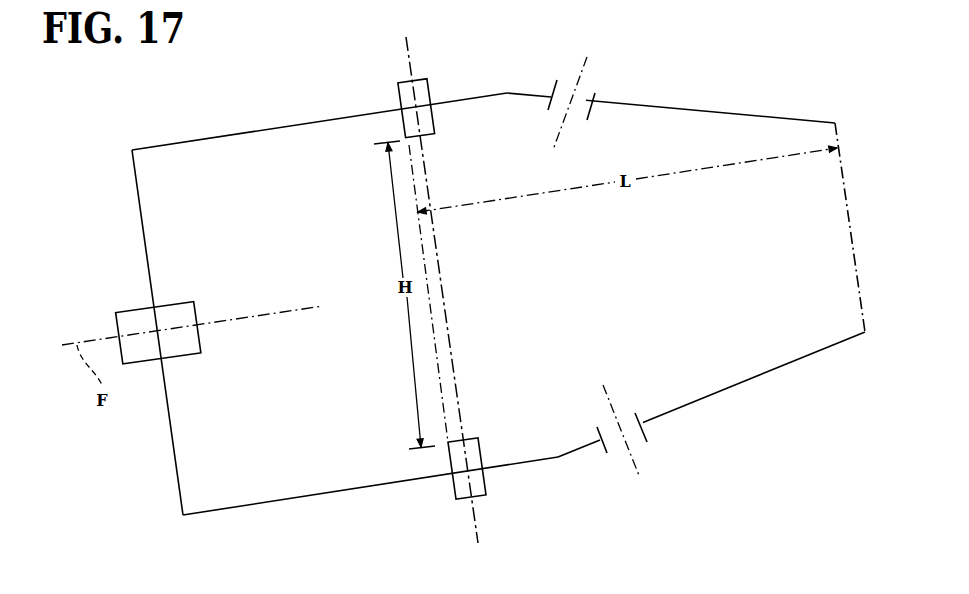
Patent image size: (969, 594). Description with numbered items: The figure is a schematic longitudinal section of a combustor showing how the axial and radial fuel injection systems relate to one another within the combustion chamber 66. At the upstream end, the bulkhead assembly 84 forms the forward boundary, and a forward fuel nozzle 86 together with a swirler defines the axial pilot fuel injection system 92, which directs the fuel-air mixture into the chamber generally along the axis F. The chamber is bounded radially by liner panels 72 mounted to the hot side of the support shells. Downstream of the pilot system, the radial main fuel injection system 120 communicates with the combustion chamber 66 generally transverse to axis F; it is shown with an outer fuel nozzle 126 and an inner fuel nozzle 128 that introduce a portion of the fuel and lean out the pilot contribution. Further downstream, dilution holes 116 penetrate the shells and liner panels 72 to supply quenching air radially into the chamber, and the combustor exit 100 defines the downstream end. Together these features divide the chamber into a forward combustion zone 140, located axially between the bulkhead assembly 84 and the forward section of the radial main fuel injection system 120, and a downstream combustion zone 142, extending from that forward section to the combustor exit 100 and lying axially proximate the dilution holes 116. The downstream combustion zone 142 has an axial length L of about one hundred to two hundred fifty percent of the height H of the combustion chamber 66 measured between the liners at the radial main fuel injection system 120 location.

The combustion chamber 66 is at (700, 107).
The liner panels 72 is at (284, 128).
The bulkhead assembly 84 is at (182, 478).
The forward fuel nozzles 86 is at (133, 308).
The axial pilot fuel injection system 92 is at (92, 238).
The combustor exit 100 is at (843, 175).
The dilution holes 116 is at (580, 100).
The radial main fuel injection system 120 is at (395, 53).
The outer fuel nozzles 126 is at (433, 93).
The inner fuel nozzles 128 is at (487, 483).
The forward combustion zone 140 is at (266, 276).
The downstream combustion zone 142 is at (682, 292).